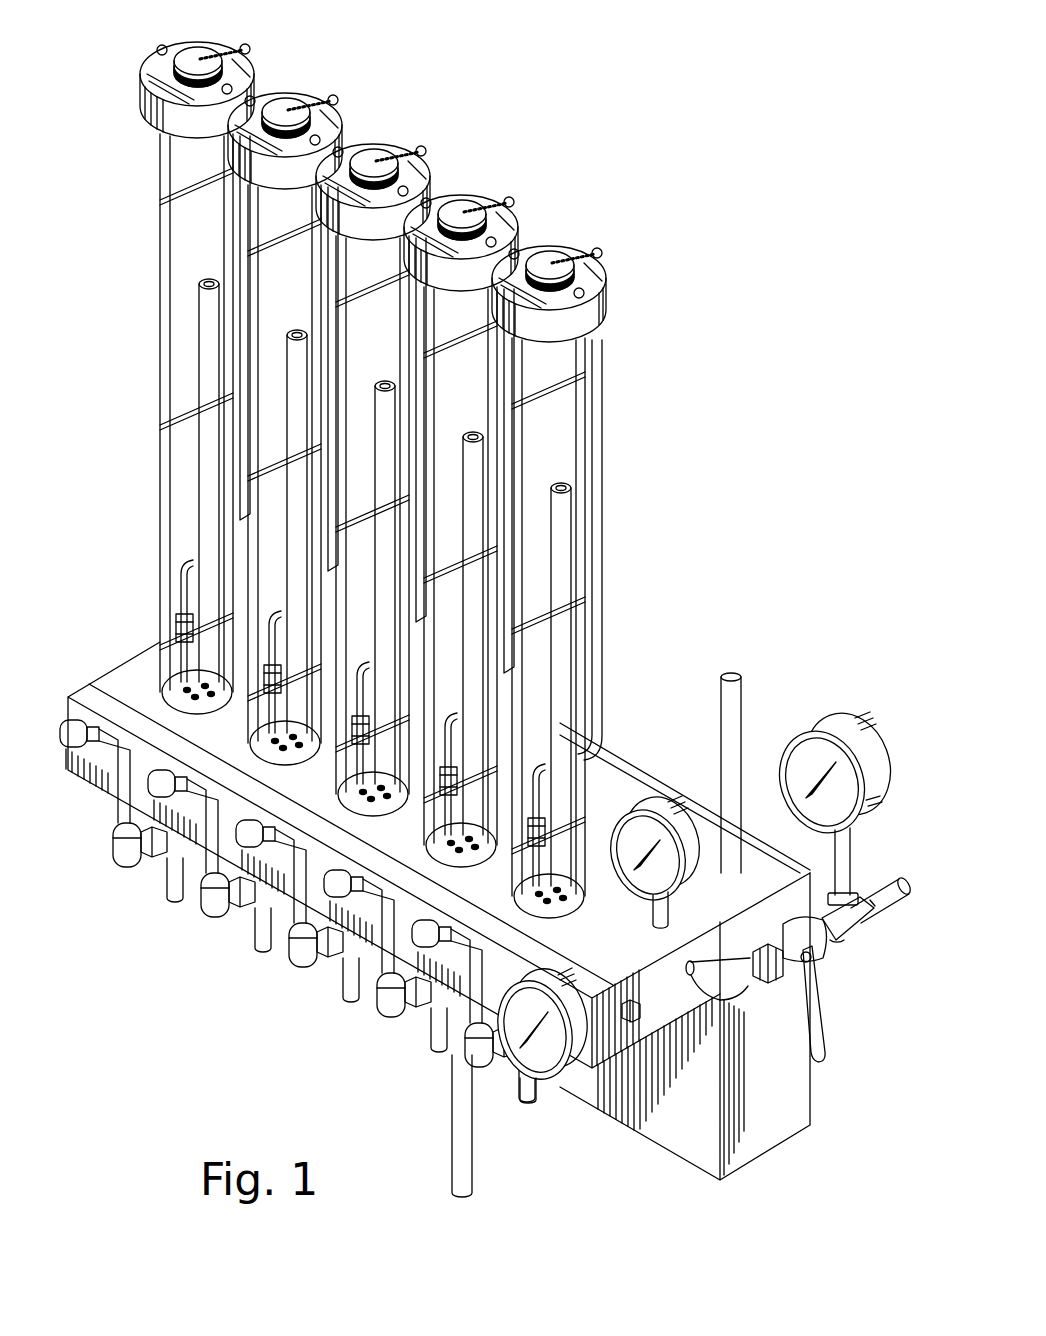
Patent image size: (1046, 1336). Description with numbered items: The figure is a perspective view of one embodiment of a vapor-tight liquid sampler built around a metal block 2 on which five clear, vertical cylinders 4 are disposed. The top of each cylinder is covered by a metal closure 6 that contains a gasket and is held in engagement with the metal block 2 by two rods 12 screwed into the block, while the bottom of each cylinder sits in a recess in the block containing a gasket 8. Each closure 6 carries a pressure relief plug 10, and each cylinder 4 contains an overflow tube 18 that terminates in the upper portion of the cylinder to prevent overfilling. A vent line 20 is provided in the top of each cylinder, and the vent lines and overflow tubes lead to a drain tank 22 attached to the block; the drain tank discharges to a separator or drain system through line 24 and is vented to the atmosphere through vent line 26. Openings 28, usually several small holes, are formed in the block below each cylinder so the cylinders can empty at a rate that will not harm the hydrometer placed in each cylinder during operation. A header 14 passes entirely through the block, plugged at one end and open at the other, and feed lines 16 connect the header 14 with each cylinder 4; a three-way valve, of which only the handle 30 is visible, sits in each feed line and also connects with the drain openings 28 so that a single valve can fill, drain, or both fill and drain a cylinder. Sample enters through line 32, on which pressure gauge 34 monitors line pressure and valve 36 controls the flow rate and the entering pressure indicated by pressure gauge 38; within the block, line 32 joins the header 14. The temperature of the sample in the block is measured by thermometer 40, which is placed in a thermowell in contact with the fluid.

The metal block 2 is at (627, 952).
The cylinder 4 is at (192, 383).
The metal closure 6 is at (140, 66).
The gasket 8 is at (163, 700).
The pressure relief plug 10 is at (195, 55).
The rod 12 is at (160, 178).
The header 14 is at (641, 1008).
The feed line 16 is at (117, 800).
The overflow tube 18 is at (208, 279).
The vent line 20 is at (180, 600).
The drain tank 22 is at (778, 1051).
The line 24 is at (473, 1162).
The vent line 26 is at (722, 680).
The openings 28 is at (206, 703).
The handle 30 is at (168, 893).
The line 32 is at (888, 902).
The pressure gauge 34 is at (826, 724).
The valve 36 is at (826, 980).
The pressure gauge 38 is at (690, 876).
The thermometer 40 is at (550, 1080).